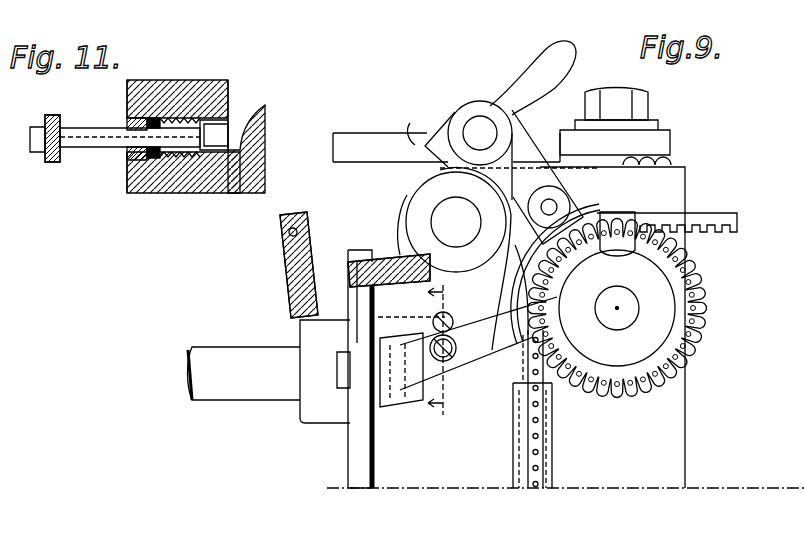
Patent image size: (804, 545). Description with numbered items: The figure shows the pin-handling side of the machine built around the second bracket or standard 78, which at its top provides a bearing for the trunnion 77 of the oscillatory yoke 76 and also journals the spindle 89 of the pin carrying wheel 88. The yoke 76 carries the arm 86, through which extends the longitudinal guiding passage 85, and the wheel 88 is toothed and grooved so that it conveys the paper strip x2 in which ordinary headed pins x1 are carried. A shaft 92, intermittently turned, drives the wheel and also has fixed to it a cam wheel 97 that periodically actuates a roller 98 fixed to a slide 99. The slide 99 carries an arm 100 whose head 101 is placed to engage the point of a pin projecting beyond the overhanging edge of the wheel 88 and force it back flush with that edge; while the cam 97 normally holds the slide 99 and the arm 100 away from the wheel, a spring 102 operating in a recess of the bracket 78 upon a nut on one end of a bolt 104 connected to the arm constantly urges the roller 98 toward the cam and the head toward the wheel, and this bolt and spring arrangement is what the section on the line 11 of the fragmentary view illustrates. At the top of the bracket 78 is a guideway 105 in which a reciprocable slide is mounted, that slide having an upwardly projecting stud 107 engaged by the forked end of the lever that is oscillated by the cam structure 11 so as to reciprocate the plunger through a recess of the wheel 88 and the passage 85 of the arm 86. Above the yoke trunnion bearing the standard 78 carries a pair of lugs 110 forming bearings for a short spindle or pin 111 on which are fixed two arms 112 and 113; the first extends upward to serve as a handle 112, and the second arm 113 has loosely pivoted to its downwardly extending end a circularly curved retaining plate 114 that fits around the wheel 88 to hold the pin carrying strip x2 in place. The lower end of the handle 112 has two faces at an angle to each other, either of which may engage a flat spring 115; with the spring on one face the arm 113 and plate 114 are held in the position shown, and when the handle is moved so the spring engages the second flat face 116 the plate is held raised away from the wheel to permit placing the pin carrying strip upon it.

In FIG. 11, the bracket or standard 78 is at (185, 194).
In FIG. 9, the bracket or standard 78 is at (660, 400).
In FIG. 11, the bolt 104 is at (92, 128).
In FIG. 9, the bolt 104 is at (455, 360).
In FIG. 11, the guideway 105 is at (228, 128).
In FIG. 11, the arm 100 is at (60, 155).
In FIG. 9, the arm 100 is at (478, 343).
In FIG. 11, the spring 102 is at (150, 165).
In FIG. 9, the handle 112 is at (540, 50).
In FIG. 9, the lugs 110 is at (478, 95).
In FIG. 9, the spindle or pin 111 is at (480, 133).
In FIG. 9, the second flat face 116 is at (390, 137).
In FIG. 9, the arm 113 is at (545, 140).
In FIG. 9, the stud 107 is at (610, 85).
In FIG. 9, the flat spring 115 is at (578, 150).
In FIG. 9, the retaining plate 114 is at (590, 215).
In FIG. 9, the paper strip x2 is at (710, 212).
In FIG. 9, the pin carrying wheel 88 is at (652, 297).
In FIG. 9, the spindle 89 is at (617, 318).
In FIG. 9, the head 101 is at (555, 305).
In FIG. 9, the trunnion 77 is at (456, 222).
In FIG. 9, the oscillatory yoke 76 is at (348, 275).
In FIG. 9, the arm 86 is at (288, 268).
In FIG. 9, the guiding passage 85 is at (295, 228).
In FIG. 9, the shaft 92 is at (248, 380).
In FIG. 9, the roller 98 is at (358, 387).
In FIG. 9, the cam wheel 97 is at (355, 448).
In FIG. 9, the slide 99 is at (390, 407).
In FIG. 9, the cam structure 11 is at (446, 354).
In FIG. 9, the pin x1 is at (540, 280).